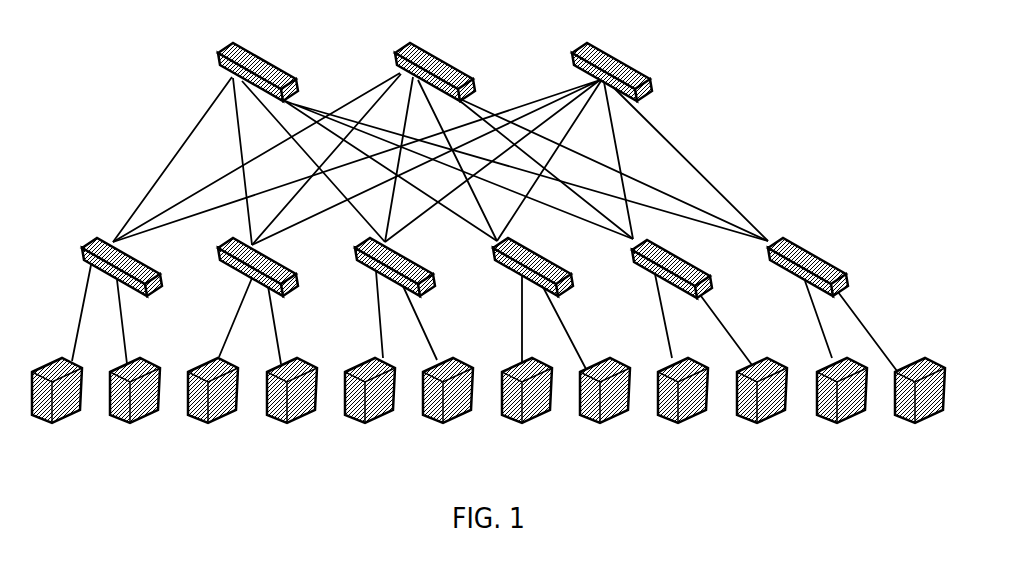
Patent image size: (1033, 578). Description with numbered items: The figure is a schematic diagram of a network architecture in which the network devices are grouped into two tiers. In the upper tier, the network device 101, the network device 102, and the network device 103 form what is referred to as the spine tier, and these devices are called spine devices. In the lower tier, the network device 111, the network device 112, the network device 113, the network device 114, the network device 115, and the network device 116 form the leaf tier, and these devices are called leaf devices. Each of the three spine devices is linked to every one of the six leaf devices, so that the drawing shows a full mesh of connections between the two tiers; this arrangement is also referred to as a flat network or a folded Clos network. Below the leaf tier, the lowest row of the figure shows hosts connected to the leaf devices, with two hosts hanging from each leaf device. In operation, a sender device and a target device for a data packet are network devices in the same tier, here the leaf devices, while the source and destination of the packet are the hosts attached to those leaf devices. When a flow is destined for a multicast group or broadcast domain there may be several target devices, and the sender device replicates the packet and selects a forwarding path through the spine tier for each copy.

The network device 101 is at (260, 66).
The network device 102 is at (439, 66).
The network device 103 is at (617, 68).
The network device 111 is at (130, 267).
The network device 112 is at (270, 267).
The network device 113 is at (403, 265).
The network device 114 is at (538, 265).
The network device 115 is at (672, 264).
The network device 116 is at (810, 263).